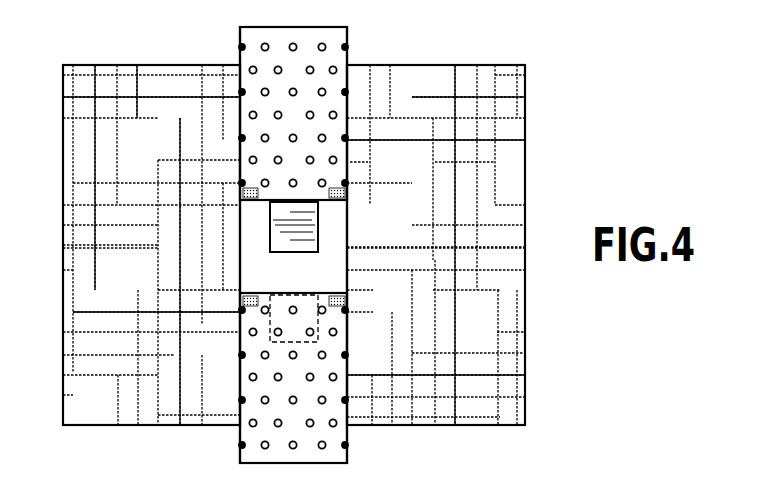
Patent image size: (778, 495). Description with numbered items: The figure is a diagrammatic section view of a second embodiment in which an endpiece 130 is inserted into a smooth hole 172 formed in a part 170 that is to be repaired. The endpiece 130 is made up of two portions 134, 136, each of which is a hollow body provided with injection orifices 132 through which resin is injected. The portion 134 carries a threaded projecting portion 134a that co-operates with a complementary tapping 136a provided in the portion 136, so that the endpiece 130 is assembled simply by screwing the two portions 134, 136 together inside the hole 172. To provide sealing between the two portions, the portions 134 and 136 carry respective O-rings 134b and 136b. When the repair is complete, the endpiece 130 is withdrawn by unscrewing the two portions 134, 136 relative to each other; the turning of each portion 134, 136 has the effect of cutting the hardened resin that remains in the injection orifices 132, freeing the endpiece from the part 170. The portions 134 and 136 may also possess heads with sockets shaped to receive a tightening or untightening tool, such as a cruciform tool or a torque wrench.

The endpiece 130 is at (363, 47).
The injection orifices 132 is at (262, 138).
The portion 134 is at (250, 38).
The threaded projecting portion 134a is at (270, 218).
The O-ring 134b is at (348, 187).
The portion 136 is at (275, 430).
The complementary tapping 136a is at (303, 314).
The O-ring 136b is at (348, 298).
The part 170 is at (497, 126).
The smooth hole 172 is at (327, 228).